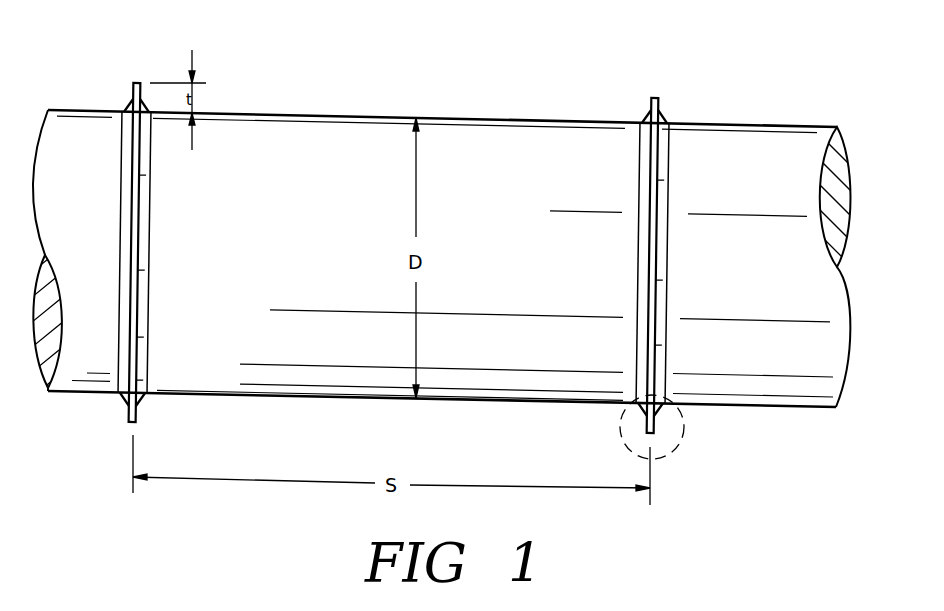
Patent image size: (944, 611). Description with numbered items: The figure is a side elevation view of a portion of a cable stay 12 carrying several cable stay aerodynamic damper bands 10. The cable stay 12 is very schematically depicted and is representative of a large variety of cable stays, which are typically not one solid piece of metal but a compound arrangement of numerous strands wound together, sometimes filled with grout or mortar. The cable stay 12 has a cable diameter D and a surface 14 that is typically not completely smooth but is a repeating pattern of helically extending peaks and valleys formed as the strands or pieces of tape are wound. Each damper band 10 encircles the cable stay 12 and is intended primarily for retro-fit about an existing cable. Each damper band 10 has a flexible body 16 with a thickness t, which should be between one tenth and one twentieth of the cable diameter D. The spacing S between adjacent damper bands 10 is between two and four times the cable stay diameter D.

The cable stay aerodynamic damper band 10 is at (442, 262).
The cable stay 12 is at (442, 265).
The surface 14 is at (727, 125).
The flexible body 16 is at (663, 355).